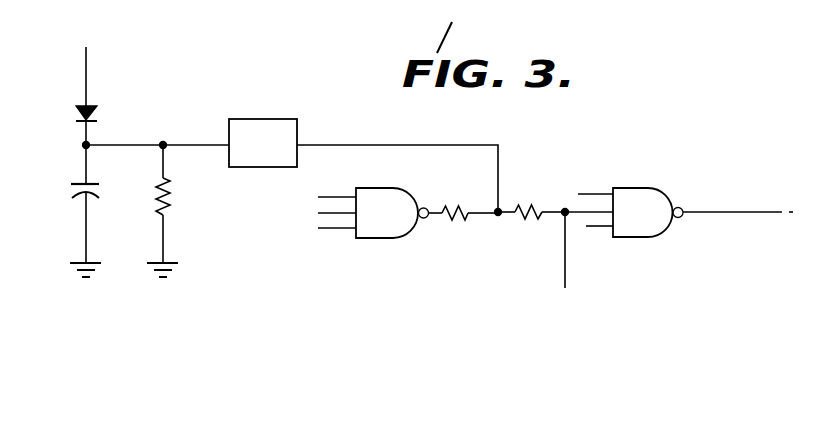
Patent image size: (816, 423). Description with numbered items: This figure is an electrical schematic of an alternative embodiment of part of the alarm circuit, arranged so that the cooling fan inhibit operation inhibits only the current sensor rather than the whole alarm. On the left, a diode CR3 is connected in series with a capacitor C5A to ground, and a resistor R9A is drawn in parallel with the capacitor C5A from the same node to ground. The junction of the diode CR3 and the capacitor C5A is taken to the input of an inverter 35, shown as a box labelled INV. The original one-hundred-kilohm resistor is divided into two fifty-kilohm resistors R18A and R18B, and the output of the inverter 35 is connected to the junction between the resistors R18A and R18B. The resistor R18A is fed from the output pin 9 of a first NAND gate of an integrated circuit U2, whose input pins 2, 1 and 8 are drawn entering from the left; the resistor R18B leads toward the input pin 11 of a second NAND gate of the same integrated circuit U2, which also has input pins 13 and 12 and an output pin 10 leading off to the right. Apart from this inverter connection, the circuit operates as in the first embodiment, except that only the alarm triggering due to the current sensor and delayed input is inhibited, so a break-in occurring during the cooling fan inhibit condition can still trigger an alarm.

The inverter 35 is at (250, 119).
The diode CR3 is at (105, 112).
The capacitor C5A is at (59, 229).
The resistor R9A is at (181, 211).
The 50 Kohm resistor R18A is at (470, 216).
The 50 Kohm resistor R18B is at (531, 214).
The NAND gate integrated circuit U2 is at (555, 204).
The gate A input pin 1 is at (337, 205).
The gate A input pin 2 is at (337, 188).
The gate A input pin 8 is at (337, 240).
The gate A output pin 9 is at (430, 201).
The gate B output pin 10 is at (734, 201).
The gate B input pin 11 is at (590, 205).
The gate B input pin 12 is at (599, 235).
The gate B input pin 13 is at (595, 184).